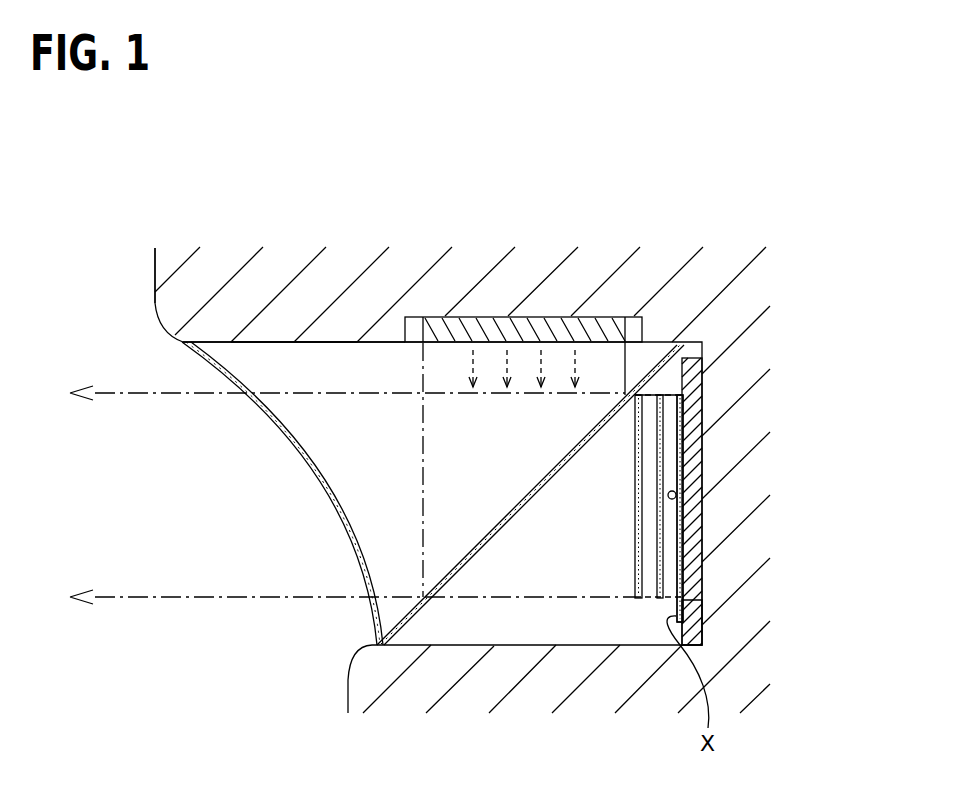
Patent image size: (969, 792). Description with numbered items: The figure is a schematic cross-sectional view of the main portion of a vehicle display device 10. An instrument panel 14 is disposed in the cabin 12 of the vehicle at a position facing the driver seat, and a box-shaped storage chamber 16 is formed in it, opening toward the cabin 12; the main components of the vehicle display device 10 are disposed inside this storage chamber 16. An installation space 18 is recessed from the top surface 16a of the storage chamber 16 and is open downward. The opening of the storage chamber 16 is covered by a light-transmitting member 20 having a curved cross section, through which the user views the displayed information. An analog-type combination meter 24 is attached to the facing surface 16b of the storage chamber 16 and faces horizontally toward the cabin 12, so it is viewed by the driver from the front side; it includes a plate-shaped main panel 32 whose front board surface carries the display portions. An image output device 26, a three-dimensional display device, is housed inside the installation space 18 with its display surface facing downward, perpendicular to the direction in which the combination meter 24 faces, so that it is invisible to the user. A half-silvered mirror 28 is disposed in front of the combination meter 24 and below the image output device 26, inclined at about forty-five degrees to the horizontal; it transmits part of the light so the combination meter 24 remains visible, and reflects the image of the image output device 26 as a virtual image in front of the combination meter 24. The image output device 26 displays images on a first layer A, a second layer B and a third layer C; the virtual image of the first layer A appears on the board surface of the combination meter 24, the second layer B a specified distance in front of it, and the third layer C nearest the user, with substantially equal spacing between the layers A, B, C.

The vehicle display device 10 is at (763, 343).
The cabin 12 is at (218, 488).
The instrument panel 14 is at (162, 297).
The storage chamber 16 is at (343, 360).
The top surface 16a is at (269, 340).
The facing surface 16b is at (701, 467).
The installation space 18 is at (406, 330).
The light-transmitting member 20 is at (348, 526).
The combination meter 24 is at (703, 518).
The image output device 26 is at (556, 327).
The half-silvered mirror 28 is at (413, 624).
The main panel 32 is at (700, 606).
The first layer A is at (683, 402).
The second layer B is at (658, 598).
The third layer C is at (636, 598).